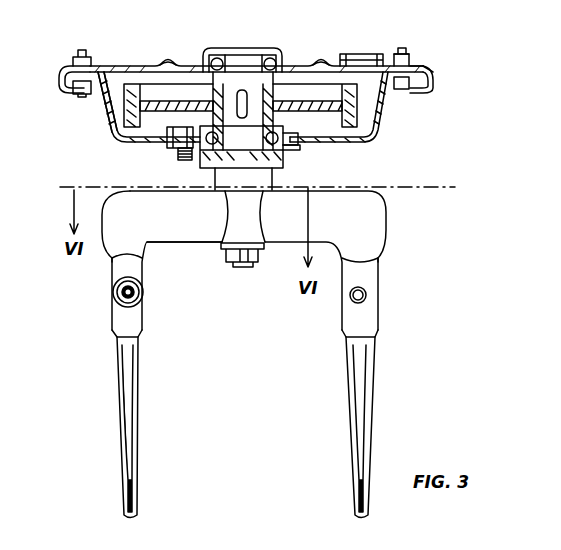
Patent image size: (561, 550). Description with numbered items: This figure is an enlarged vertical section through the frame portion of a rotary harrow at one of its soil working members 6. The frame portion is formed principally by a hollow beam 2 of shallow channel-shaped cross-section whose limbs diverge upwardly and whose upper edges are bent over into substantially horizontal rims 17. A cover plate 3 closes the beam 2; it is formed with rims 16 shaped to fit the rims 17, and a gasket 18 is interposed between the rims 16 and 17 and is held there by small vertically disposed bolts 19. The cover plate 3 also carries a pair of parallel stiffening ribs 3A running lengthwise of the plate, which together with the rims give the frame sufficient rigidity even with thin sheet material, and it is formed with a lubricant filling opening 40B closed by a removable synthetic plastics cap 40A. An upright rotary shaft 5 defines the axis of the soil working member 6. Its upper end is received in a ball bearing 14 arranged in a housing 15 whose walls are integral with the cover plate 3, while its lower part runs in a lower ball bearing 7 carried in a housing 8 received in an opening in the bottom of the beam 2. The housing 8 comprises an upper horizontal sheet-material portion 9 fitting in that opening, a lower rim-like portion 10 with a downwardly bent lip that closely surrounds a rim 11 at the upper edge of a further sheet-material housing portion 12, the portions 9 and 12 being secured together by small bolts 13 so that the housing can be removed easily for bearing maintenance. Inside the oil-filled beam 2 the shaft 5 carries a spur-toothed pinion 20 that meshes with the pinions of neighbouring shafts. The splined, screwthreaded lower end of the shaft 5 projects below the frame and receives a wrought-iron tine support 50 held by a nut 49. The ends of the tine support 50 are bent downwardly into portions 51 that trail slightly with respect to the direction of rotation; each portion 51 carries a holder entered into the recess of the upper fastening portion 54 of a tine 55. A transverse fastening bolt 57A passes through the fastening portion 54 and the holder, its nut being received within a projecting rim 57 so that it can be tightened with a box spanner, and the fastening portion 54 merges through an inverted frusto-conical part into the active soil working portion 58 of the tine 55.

The beam 2 is at (104, 94).
The cover plate 3 is at (190, 66).
The stiffening rib 3A is at (164, 64).
The rotary shaft 5 is at (260, 90).
The soil working member 6 is at (393, 215).
The lower ball bearing 7 is at (225, 148).
The housing 8 is at (318, 152).
The upper housing portion 9 is at (196, 100).
The lower rim-like portion 10 is at (175, 140).
The rim 11 is at (296, 150).
The housing portion 12 is at (288, 168).
The bolt 13 is at (180, 160).
The ball bearing 14 is at (214, 48).
The housing 15 is at (249, 48).
The rim 16 is at (427, 73).
The rim 17 is at (70, 90).
The gasket 18 is at (426, 68).
The bolt 19 is at (82, 56).
The pinion 20 is at (128, 66).
The cap 40A is at (356, 54).
The lubricant filling opening 40B is at (368, 58).
The nut 49 is at (232, 258).
The tine support 50 is at (190, 232).
The bent-over portion 51 is at (112, 252).
The fastening portion 54 is at (112, 313).
The tine 55 is at (120, 445).
The rim 57 is at (140, 308).
The fastening bolt 57A is at (350, 296).
The soil working portion 58 is at (360, 408).